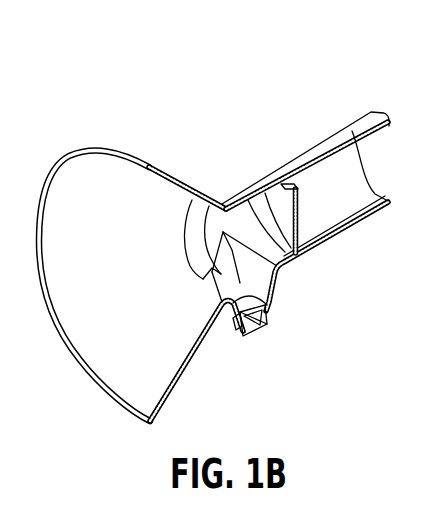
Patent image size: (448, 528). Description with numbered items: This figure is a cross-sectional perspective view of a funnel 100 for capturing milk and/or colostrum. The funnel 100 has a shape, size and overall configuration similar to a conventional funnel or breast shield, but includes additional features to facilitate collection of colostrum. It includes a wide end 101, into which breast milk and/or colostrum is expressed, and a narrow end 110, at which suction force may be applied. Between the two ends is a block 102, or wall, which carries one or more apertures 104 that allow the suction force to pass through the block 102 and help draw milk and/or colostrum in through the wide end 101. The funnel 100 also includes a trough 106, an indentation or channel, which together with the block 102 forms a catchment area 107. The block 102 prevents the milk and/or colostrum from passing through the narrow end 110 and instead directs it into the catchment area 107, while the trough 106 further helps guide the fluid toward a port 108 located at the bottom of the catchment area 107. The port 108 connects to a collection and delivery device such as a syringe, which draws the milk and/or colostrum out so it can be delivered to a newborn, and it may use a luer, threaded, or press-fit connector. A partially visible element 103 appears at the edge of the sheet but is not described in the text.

The assembly 100 is at (216, 91).
The dome shell 101 is at (125, 151).
The channel rail 102 is at (299, 210).
The rail member 103 is at (440, 288).
The web connecting member 104 is at (305, 182).
The hook clip 106 is at (219, 298).
The interior surface 107 is at (236, 258).
The bracket 108 is at (262, 316).
The flap tab 110 is at (363, 163).